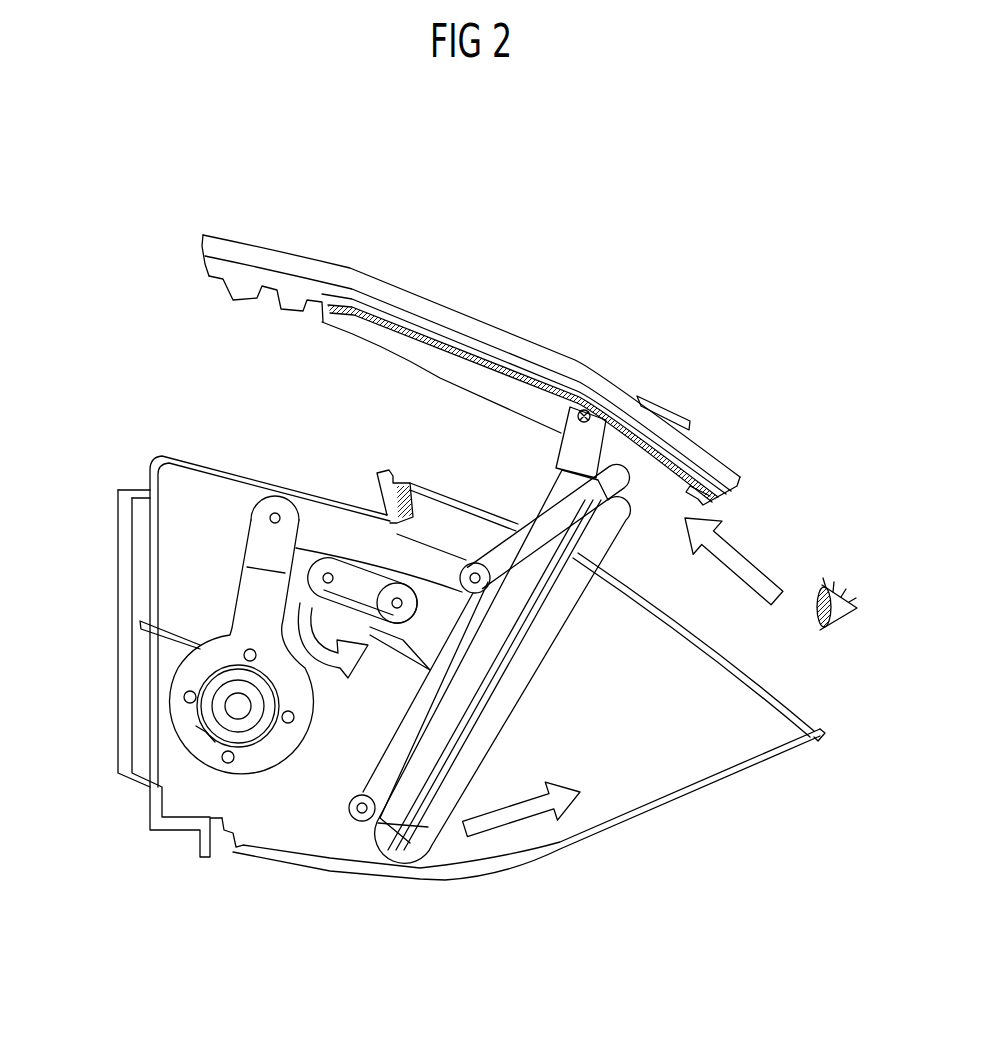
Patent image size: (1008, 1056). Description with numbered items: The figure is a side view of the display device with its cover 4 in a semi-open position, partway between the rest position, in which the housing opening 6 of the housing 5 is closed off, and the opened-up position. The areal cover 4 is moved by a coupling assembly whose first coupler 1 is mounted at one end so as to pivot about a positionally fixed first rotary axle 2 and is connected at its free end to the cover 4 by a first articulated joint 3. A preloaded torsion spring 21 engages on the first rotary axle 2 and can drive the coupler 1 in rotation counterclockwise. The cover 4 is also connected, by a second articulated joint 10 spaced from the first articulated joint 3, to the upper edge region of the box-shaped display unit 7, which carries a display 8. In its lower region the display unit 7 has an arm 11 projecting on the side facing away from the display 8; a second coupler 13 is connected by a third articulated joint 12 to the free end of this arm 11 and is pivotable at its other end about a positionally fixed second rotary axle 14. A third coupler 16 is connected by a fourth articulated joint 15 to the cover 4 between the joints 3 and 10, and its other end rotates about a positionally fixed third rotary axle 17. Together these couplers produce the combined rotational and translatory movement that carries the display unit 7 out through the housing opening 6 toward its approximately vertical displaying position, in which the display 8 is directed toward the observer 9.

The coupler 1 is at (247, 596).
The first rotary axle 2 is at (238, 707).
The first articulated joint 3 is at (276, 512).
The cover 4 is at (506, 336).
The housing 5 is at (229, 470).
The housing opening 6 is at (787, 693).
The display unit 7 is at (558, 661).
The display 8 is at (612, 548).
The observer 9 is at (840, 590).
The second articulated joint 10 is at (586, 410).
The arm 11 is at (405, 630).
The third articulated joint 12 is at (328, 572).
The second coupler 13 is at (364, 583).
The second rotary axle 14 is at (399, 596).
The fourth articulated joint 15 is at (477, 569).
The third coupler 16 is at (404, 744).
The third rotary axle 17 is at (363, 814).
The torsion spring 21 is at (200, 740).